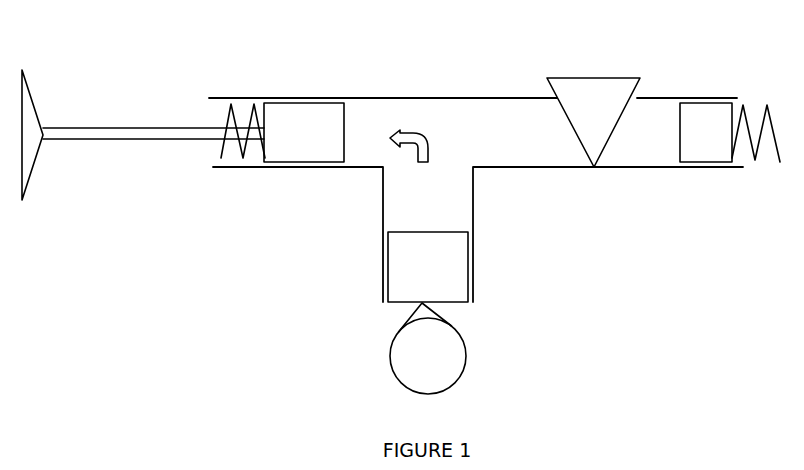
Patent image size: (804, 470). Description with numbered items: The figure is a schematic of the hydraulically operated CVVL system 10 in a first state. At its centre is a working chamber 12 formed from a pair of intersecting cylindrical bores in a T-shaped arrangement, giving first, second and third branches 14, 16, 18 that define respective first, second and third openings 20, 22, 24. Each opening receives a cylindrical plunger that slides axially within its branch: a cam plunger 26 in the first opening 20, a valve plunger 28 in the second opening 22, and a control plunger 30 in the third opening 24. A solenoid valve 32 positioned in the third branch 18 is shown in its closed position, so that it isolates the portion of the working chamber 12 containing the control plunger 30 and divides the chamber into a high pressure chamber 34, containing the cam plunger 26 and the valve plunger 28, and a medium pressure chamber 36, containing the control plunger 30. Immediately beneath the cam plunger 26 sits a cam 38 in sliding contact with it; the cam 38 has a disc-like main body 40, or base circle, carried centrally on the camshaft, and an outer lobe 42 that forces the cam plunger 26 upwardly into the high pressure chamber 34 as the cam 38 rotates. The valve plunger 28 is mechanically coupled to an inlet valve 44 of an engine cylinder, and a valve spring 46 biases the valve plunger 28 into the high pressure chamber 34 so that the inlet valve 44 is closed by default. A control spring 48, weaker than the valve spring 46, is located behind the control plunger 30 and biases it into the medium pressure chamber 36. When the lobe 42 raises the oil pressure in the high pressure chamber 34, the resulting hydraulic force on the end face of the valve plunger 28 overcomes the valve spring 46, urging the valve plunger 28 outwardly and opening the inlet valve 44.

The hydraulically operated CVVL system 10 is at (80, 303).
The working chamber 12 is at (485, 148).
The first branch 14 is at (452, 198).
The second branch 16 is at (363, 117).
The third branch 18 is at (530, 118).
The first opening 20 is at (472, 303).
The second opening 22 is at (213, 157).
The third opening 24 is at (743, 95).
The cam plunger 26 is at (418, 263).
The valve plunger 28 is at (298, 153).
The control plunger 30 is at (700, 153).
The solenoid valve 32 is at (605, 97).
The high pressure chamber 34 is at (443, 118).
The medium pressure chamber 36 is at (653, 148).
The cam 38 is at (465, 372).
The disc-like main body 40 is at (413, 372).
The outer lobe 42 is at (420, 308).
The inlet valve 44 is at (37, 148).
The valve spring 46 is at (243, 158).
The control spring 48 is at (758, 158).